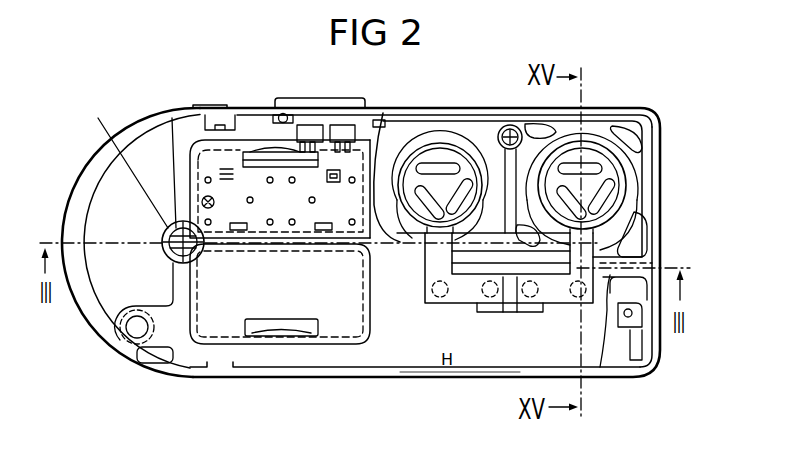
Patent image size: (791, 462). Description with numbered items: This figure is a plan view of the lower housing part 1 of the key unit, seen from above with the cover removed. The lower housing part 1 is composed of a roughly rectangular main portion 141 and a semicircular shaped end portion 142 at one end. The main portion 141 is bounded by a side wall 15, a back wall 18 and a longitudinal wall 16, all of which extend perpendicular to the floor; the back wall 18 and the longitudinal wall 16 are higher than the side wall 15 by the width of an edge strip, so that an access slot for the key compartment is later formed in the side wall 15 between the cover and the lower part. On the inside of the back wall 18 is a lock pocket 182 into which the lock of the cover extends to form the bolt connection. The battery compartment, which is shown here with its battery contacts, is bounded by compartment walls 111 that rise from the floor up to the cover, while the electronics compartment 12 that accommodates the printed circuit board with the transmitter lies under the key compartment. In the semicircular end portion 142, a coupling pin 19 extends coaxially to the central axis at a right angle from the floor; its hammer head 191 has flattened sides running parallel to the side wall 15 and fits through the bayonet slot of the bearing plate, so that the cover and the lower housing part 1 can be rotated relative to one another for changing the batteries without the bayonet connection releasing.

The lower housing part 1 is at (240, 100).
The electronics compartment 12 is at (490, 320).
The side wall 15 is at (347, 380).
The longitudinal wall 16 is at (452, 108).
The back wall 18 is at (660, 163).
The coupling pin 19 is at (172, 232).
The compartment walls 111 is at (384, 112).
The main portion 141 is at (462, 331).
The semicircular end portion 142 is at (104, 281).
The lock pocket 182 is at (624, 279).
The hammer head 191 is at (165, 238).